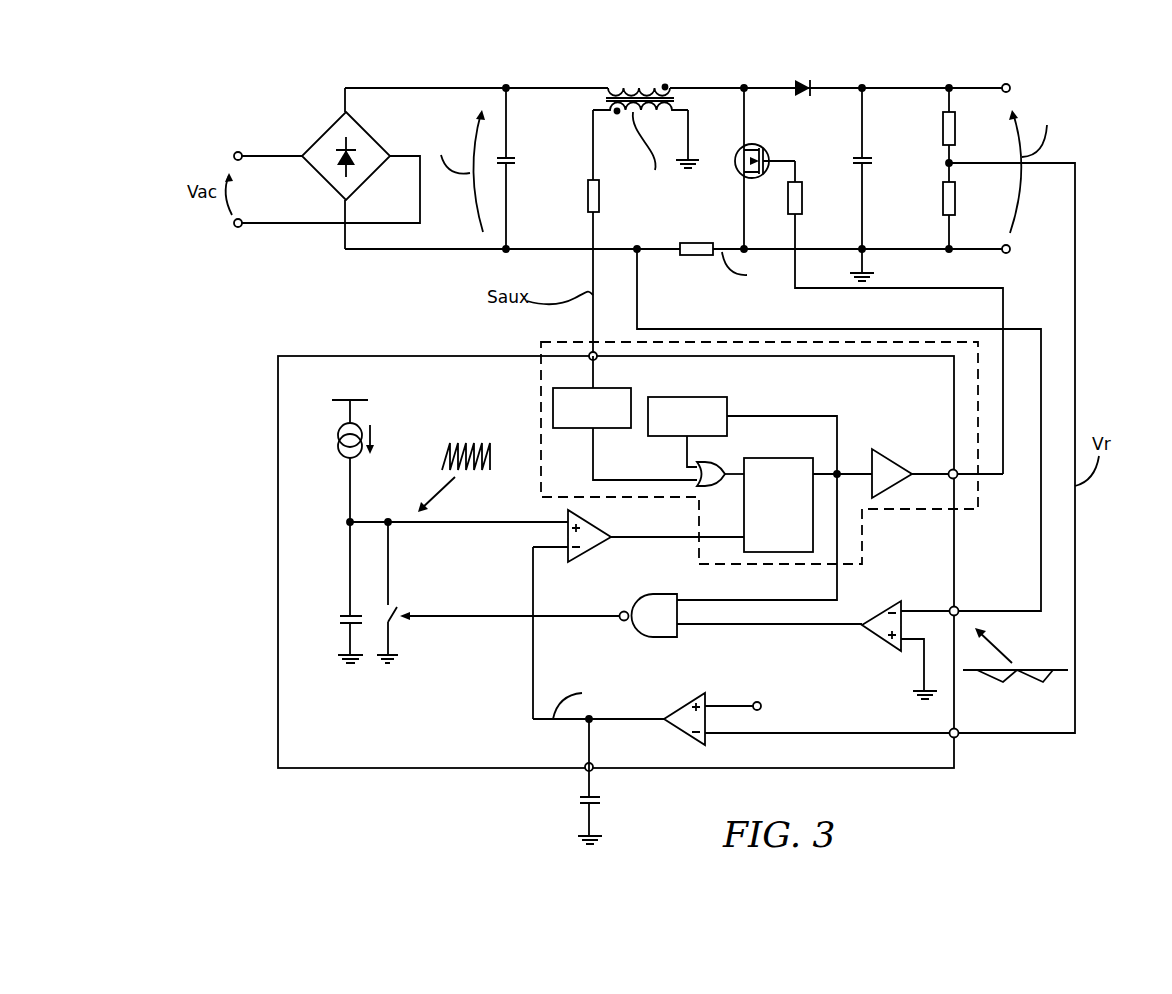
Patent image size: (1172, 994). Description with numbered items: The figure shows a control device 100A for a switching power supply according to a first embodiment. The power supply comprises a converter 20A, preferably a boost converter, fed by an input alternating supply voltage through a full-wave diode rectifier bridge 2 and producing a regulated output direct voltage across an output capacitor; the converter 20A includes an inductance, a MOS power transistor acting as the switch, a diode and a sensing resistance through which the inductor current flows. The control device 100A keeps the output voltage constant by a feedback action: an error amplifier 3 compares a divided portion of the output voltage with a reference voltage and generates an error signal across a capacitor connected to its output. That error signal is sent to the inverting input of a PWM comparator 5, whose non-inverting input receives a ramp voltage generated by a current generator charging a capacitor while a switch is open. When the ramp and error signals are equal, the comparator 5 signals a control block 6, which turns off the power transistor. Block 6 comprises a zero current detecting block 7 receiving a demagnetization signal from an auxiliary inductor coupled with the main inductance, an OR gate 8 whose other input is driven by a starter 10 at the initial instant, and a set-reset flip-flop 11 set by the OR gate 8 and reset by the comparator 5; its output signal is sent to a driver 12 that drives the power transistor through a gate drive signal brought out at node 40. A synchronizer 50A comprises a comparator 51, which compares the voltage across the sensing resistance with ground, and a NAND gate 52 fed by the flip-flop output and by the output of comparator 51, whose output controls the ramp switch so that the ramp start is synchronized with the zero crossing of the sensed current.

The full-wave diode rectifier bridge 2 is at (318, 138).
The converter 20A is at (526, 72).
The control device 100A is at (277, 552).
The control block 6 is at (877, 342).
The zero current detecting block 7 is at (607, 388).
The starter 10 is at (688, 397).
The OR gate 8 is at (708, 487).
The set-reset flip-flop 11 is at (780, 457).
The driver 12 is at (895, 457).
The gate drive node / output 40 is at (1003, 453).
The PWM comparator 5 is at (590, 552).
The synchronizer 50A is at (785, 623).
The NAND gate 52 is at (652, 593).
The comparator 51 is at (890, 602).
The error amplifier 3 is at (692, 697).